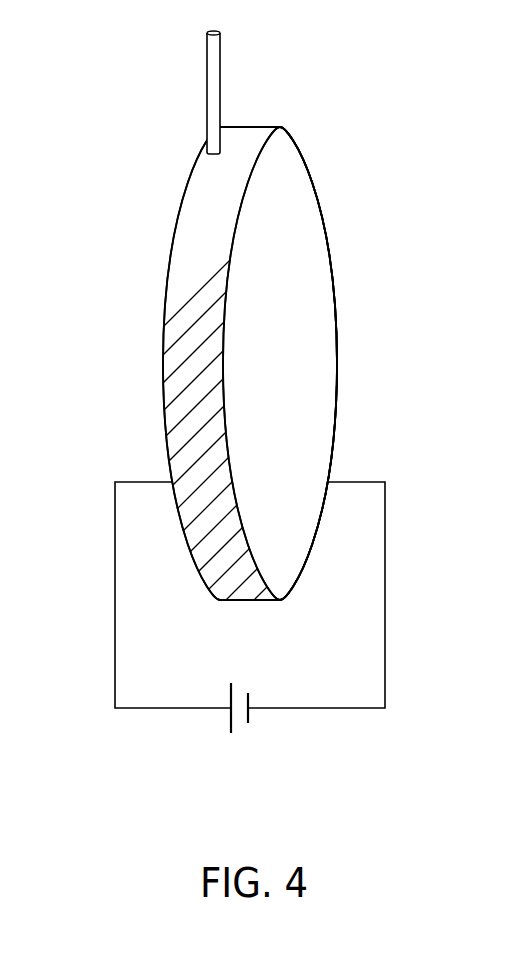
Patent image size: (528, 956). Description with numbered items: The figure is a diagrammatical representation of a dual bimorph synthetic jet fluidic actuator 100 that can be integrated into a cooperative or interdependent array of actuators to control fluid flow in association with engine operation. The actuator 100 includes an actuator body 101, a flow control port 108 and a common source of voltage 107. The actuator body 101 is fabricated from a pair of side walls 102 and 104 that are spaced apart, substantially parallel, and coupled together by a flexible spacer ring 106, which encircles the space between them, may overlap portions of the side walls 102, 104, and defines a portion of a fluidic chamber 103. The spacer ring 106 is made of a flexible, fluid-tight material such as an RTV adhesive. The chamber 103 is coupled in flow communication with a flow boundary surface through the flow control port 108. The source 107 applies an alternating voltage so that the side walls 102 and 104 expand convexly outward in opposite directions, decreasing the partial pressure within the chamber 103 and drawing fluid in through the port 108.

The synthetic jet fluidic actuator 100 is at (300, 408).
The actuator body 101 is at (352, 400).
The side wall 102 is at (337, 327).
The fluidic chamber 103 is at (313, 268).
The side wall 104 is at (163, 378).
The flexible spacer ring 106 is at (241, 134).
The common source of voltage 107 is at (229, 720).
The flow control port 108 is at (222, 70).